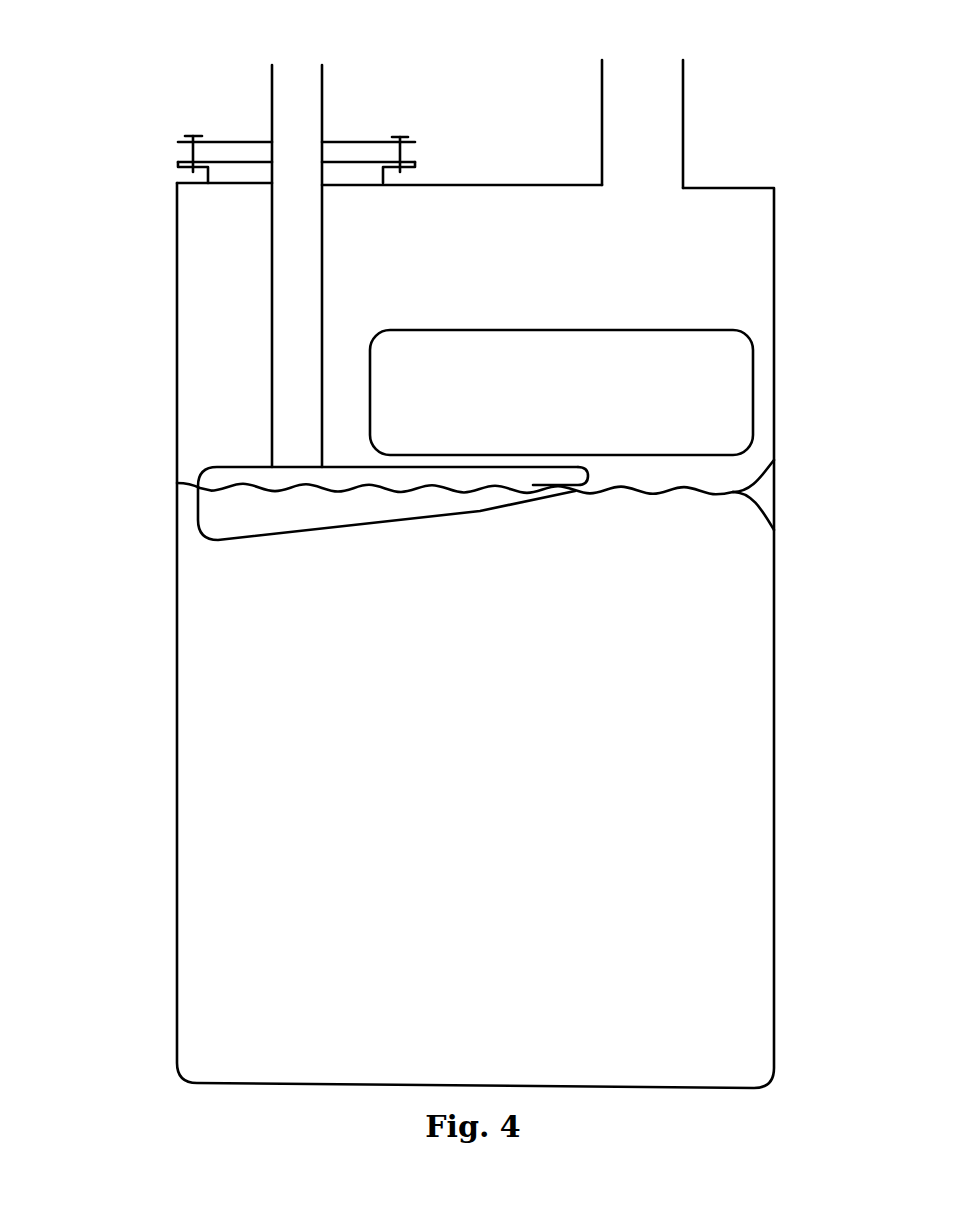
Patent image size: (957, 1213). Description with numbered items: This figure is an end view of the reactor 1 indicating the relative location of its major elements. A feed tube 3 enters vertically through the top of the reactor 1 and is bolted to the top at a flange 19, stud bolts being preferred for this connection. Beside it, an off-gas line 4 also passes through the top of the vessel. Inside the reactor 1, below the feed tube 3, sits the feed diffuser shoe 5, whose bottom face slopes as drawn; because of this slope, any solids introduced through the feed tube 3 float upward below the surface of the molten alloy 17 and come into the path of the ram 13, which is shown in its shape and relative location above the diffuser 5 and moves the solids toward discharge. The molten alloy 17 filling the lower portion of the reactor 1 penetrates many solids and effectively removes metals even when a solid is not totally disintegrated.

The reactor 1 is at (177, 665).
The feed line 3 is at (272, 95).
The off-gas line 4 is at (683, 128).
The feed diffuser shoe 5 is at (198, 502).
The ram 13 is at (755, 378).
The molten alloy 17 is at (428, 803).
The flange 19 is at (222, 140).